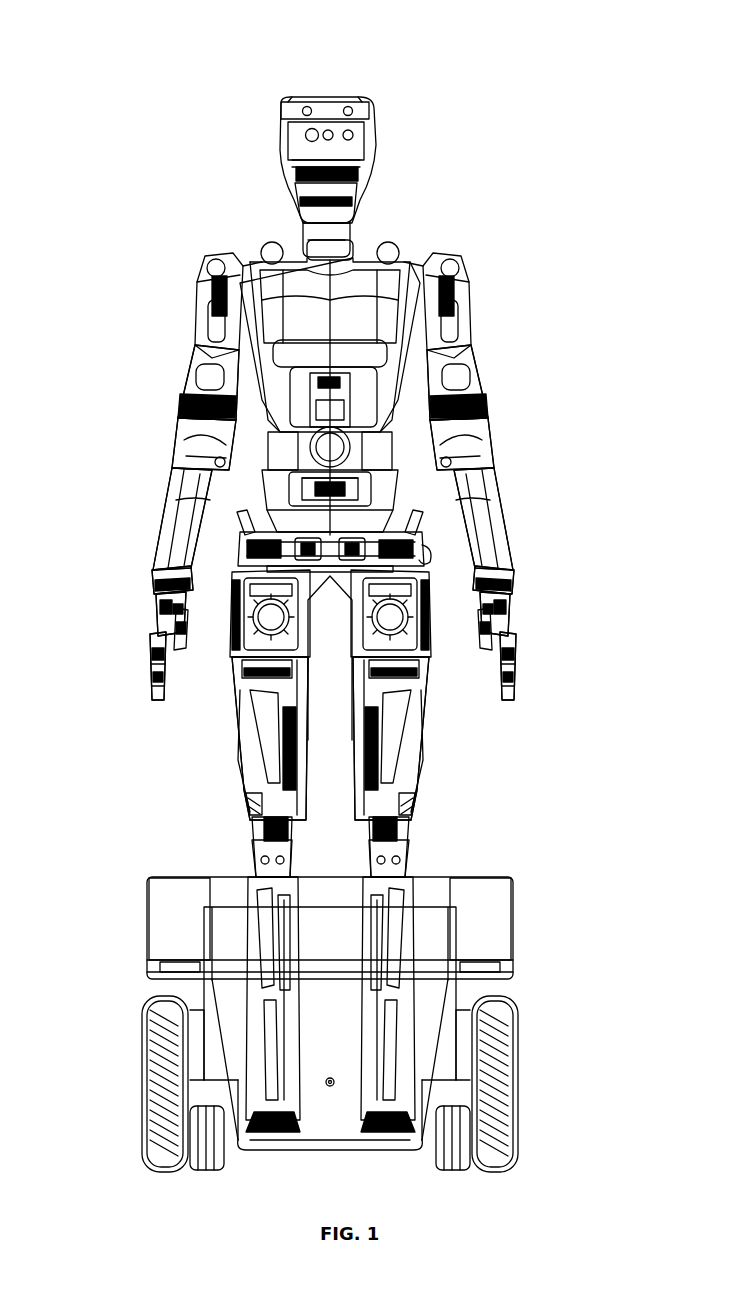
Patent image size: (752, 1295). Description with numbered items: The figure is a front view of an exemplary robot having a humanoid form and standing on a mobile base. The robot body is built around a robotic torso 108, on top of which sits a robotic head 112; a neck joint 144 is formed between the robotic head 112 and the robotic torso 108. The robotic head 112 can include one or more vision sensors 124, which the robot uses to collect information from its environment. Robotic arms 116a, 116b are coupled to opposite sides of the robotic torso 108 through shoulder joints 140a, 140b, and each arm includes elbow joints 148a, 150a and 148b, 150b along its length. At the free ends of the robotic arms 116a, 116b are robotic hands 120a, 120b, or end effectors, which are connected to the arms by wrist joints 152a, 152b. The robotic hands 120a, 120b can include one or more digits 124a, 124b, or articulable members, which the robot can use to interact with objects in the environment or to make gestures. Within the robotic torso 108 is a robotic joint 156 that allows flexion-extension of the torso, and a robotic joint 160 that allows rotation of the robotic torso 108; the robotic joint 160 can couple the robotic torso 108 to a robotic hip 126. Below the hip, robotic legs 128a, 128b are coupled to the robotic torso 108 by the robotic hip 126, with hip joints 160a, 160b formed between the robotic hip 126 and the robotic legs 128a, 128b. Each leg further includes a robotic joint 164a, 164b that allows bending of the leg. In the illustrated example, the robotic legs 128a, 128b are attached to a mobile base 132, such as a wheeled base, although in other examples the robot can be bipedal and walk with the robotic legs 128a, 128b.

The robotic torso 108 is at (388, 435).
The robotic head 112 is at (378, 150).
The robotic arm 116a is at (170, 490).
The robotic arm 116b is at (494, 490).
The robotic hand 120a is at (151, 636).
The robotic hand 120b is at (512, 640).
The vision sensors 124 is at (288, 100).
The digits 124a is at (148, 680).
The digits 124b is at (514, 680).
The robotic hip 126 is at (430, 547).
The robotic leg 128a is at (238, 748).
The robotic leg 128b is at (426, 748).
The mobile base 132 is at (513, 936).
The shoulder joint 140a is at (210, 268).
The shoulder joint 140b is at (456, 268).
The neck joint 144 is at (360, 222).
The elbow joint 148a is at (186, 384).
The elbow joint 148b is at (480, 376).
The elbow joint 150a is at (184, 448).
The elbow joint 150b is at (484, 440).
The wrist joint 152a is at (152, 578).
The wrist joint 152b is at (512, 578).
The robotic joint 156 is at (372, 484).
The robotic joint 160 is at (300, 530).
The hip joint 160a is at (232, 660).
The hip joint 160b is at (432, 660).
The robotic joint 164a is at (252, 840).
The robotic joint 164b is at (412, 840).